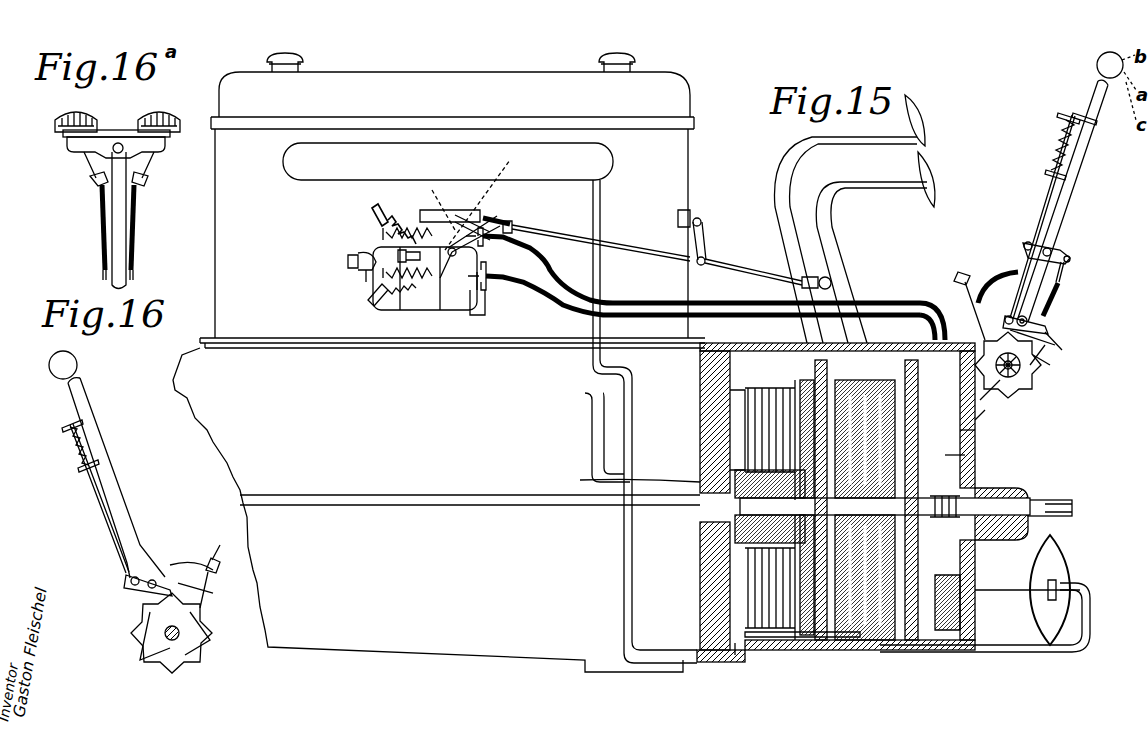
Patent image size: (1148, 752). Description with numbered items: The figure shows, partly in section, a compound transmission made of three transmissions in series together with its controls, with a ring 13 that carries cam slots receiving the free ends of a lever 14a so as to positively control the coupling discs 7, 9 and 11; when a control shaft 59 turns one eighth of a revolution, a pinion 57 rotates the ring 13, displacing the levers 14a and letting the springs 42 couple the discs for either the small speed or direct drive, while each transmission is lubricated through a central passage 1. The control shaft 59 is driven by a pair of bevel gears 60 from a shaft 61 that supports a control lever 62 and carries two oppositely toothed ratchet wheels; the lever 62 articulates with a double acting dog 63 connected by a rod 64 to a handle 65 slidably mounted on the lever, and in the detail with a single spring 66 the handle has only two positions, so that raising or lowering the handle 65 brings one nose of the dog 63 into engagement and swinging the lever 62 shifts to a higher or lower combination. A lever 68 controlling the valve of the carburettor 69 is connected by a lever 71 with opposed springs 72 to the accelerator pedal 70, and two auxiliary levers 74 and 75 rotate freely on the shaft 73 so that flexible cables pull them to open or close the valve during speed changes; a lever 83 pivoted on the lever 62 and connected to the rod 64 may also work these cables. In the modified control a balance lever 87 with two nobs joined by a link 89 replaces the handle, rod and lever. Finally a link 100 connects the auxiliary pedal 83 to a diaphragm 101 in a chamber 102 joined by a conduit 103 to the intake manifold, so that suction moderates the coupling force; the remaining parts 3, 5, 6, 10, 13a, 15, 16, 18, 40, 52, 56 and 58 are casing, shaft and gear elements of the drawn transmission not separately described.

In FIG. 15, the central passage 1 is at (700, 515).
In FIG. 15, the clutch plates 3 is at (760, 640).
In FIG. 15, the main shaft 5 is at (1000, 520).
In FIG. 15, the casing wall 6 is at (910, 640).
In FIG. 15, the disc 7 is at (745, 428).
In FIG. 15, the disc 9 is at (808, 283).
In FIG. 15, the hub 10 is at (735, 520).
In FIG. 15, the disc 11 is at (745, 460).
In FIG. 15, the ring 13 is at (768, 380).
In FIG. 15, the fork rod 13a is at (622, 480).
In FIG. 15, the lever 14a is at (925, 305).
In FIG. 15, the cover 15 is at (720, 350).
In FIG. 15, the casing cover 16 is at (720, 385).
In FIG. 15, the gear 18 is at (872, 645).
In FIG. 15, the gear 40 is at (840, 648).
In FIG. 15, the spring 42 is at (840, 420).
In FIG. 15, the bearing housing 52 is at (1000, 492).
In FIG. 15, the sleeve 56 is at (808, 378).
In FIG. 15, the pinion 57 is at (790, 345).
In FIG. 15, the coupling 58 is at (745, 530).
In FIG. 15, the control shaft 59 is at (840, 300).
In FIG. 15, the bevel gears 60 is at (1040, 375).
In FIG. 16, the shaft 61 is at (165, 640).
In FIG. 15, the shaft 61 is at (1020, 368).
In FIG. 16A, the control lever 62 is at (126, 243).
In FIG. 16, the control lever 62 is at (122, 520).
In FIG. 15, the control lever 62 is at (1078, 192).
In FIG. 16, the double acting dog 63 is at (150, 572).
In FIG. 15, the double acting dog 63 is at (1050, 330).
In FIG. 16, the rod 64 is at (112, 530).
In FIG. 15, the rod 64 is at (1045, 196).
In FIG. 16, the control handle 65 is at (77, 364).
In FIG. 15, the control handle 65 is at (1097, 66).
In FIG. 16, the spring 66 is at (78, 455).
In FIG. 15, the lever 68 is at (470, 225).
In FIG. 15, the carburettor 69 is at (478, 308).
In FIG. 15, the accelerator pedal 70 is at (932, 165).
In FIG. 15, the lever 71 is at (655, 250).
In FIG. 15, the springs 72 is at (470, 247).
In FIG. 15, the shaft 73 is at (452, 305).
In FIG. 15, the auxiliary lever 74 is at (490, 264).
In FIG. 15, the auxiliary lever 75 is at (398, 258).
In FIG. 15, the lever 83 is at (812, 143).
In FIG. 16A, the balance lever 87 is at (96, 136).
In FIG. 16A, the link 89 is at (118, 130).
In FIG. 15, the link 100 is at (975, 595).
In FIG. 15, the diaphragm 101 is at (1058, 560).
In FIG. 15, the chamber 102 is at (1066, 612).
In FIG. 15, the conduit 103 is at (624, 543).